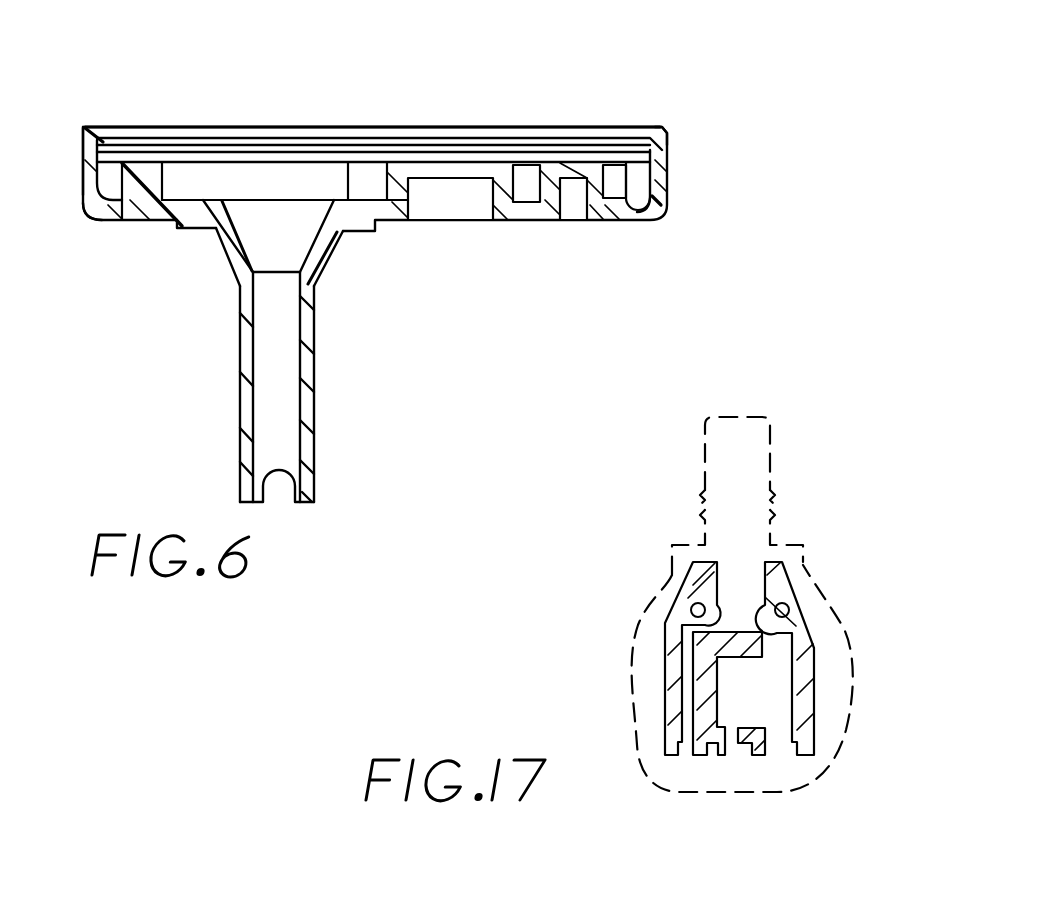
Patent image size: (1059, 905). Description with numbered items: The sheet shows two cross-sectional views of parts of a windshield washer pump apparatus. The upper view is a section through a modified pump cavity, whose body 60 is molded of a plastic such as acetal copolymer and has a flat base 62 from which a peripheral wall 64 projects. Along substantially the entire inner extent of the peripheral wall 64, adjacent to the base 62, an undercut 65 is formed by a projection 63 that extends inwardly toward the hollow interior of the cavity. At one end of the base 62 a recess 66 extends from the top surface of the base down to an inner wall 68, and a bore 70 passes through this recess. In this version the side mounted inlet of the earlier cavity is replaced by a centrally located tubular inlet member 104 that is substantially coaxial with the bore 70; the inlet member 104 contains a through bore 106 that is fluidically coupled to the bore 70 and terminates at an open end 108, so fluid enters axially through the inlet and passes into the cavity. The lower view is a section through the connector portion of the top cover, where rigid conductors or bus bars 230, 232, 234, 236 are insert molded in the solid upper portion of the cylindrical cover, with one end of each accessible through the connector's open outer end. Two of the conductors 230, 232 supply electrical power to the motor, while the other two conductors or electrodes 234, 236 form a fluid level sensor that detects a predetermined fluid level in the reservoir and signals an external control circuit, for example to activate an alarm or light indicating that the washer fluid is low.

In FIG. 6, the body 60 is at (375, 136).
In FIG. 6, the base 62 is at (372, 95).
In FIG. 6, the projection 63 is at (107, 101).
In FIG. 6, the peripheral wall 64 is at (715, 127).
In FIG. 6, the undercut 65 is at (123, 230).
In FIG. 6, the recess 66 is at (156, 129).
In FIG. 6, the inner wall 68 is at (406, 215).
In FIG. 6, the bore 70 is at (333, 252).
In FIG. 6, the tubular inlet member 104 is at (211, 387).
In FIG. 6, the through bore 106 is at (369, 387).
In FIG. 6, the open end 108 is at (329, 491).
In FIG. 17, the conductor 230 is at (693, 604).
In FIG. 17, the conductor 232 is at (651, 626).
In FIG. 17, the electrode 234 is at (826, 768).
In FIG. 17, the electrode 236 is at (785, 631).